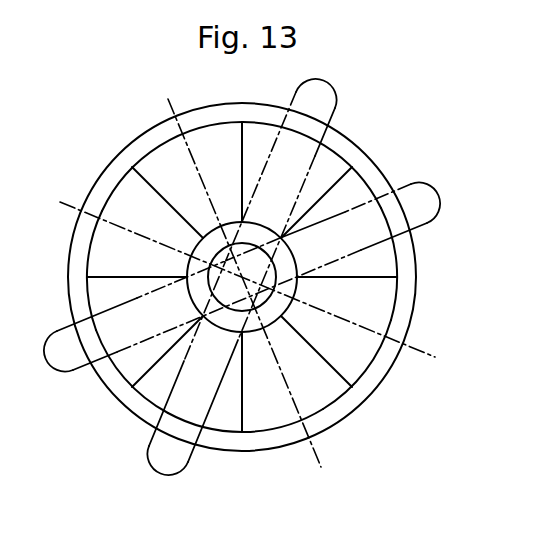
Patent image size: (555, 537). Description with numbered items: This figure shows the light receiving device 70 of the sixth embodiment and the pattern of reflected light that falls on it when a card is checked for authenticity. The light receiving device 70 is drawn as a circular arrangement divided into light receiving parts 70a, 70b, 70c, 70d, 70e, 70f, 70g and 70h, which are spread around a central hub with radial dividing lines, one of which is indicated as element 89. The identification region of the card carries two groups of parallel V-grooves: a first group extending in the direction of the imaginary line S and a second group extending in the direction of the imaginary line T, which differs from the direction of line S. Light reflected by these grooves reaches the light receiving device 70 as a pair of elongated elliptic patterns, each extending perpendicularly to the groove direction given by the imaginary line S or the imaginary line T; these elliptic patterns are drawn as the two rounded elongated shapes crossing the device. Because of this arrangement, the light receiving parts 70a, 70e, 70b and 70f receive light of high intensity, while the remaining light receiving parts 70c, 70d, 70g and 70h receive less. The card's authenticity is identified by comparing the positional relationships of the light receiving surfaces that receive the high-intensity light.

The light receiving device 70 is at (378, 180).
The light receiving part 70a is at (350, 152).
The light receiving part 70b is at (395, 264).
The light receiving part 70c is at (357, 368).
The light receiving part 70d is at (265, 418).
The light receiving part 70e is at (223, 423).
The light receiving part 70f is at (126, 374).
The light receiving part 70g is at (90, 280).
The light receiving part 70h is at (140, 160).
The spoke 89 is at (167, 202).
The imaginary line T is at (172, 102).
The imaginary line S is at (74, 207).